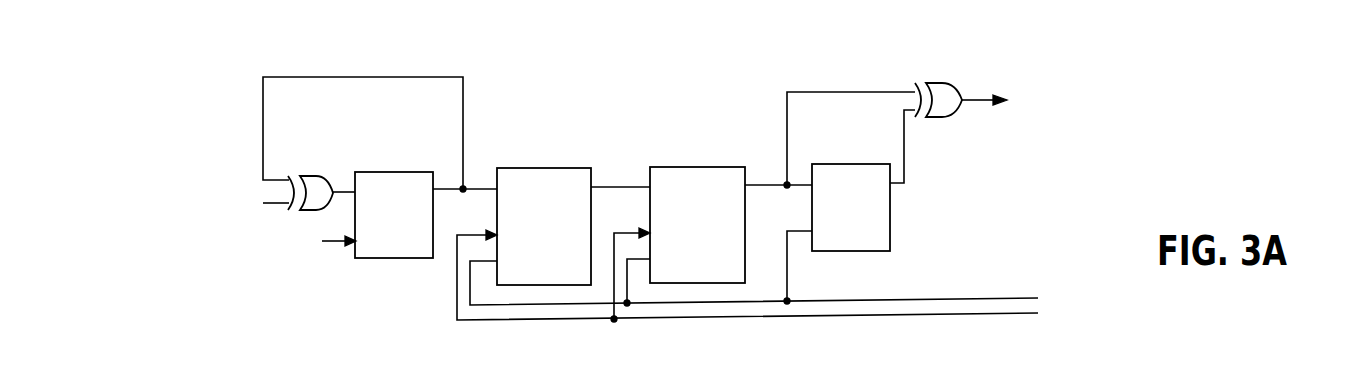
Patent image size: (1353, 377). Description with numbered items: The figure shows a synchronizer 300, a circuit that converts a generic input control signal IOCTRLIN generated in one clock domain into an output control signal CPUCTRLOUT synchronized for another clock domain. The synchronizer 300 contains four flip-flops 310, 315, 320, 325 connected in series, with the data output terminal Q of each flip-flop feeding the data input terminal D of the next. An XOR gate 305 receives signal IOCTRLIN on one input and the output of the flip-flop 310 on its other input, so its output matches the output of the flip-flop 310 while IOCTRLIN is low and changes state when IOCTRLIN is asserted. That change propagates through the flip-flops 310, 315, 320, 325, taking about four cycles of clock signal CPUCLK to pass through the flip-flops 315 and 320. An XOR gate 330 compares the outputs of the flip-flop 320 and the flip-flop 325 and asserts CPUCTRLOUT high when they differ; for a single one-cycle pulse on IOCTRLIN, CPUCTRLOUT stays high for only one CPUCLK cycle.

The synchronizer 300 is at (186, 68).
The XOR gate 305 is at (313, 178).
The flip-flop 310 is at (417, 254).
The flip-flop 315 is at (548, 170).
The flip-flop 320 is at (703, 170).
The flip-flop 325 is at (853, 167).
The XOR gate 330 is at (930, 85).